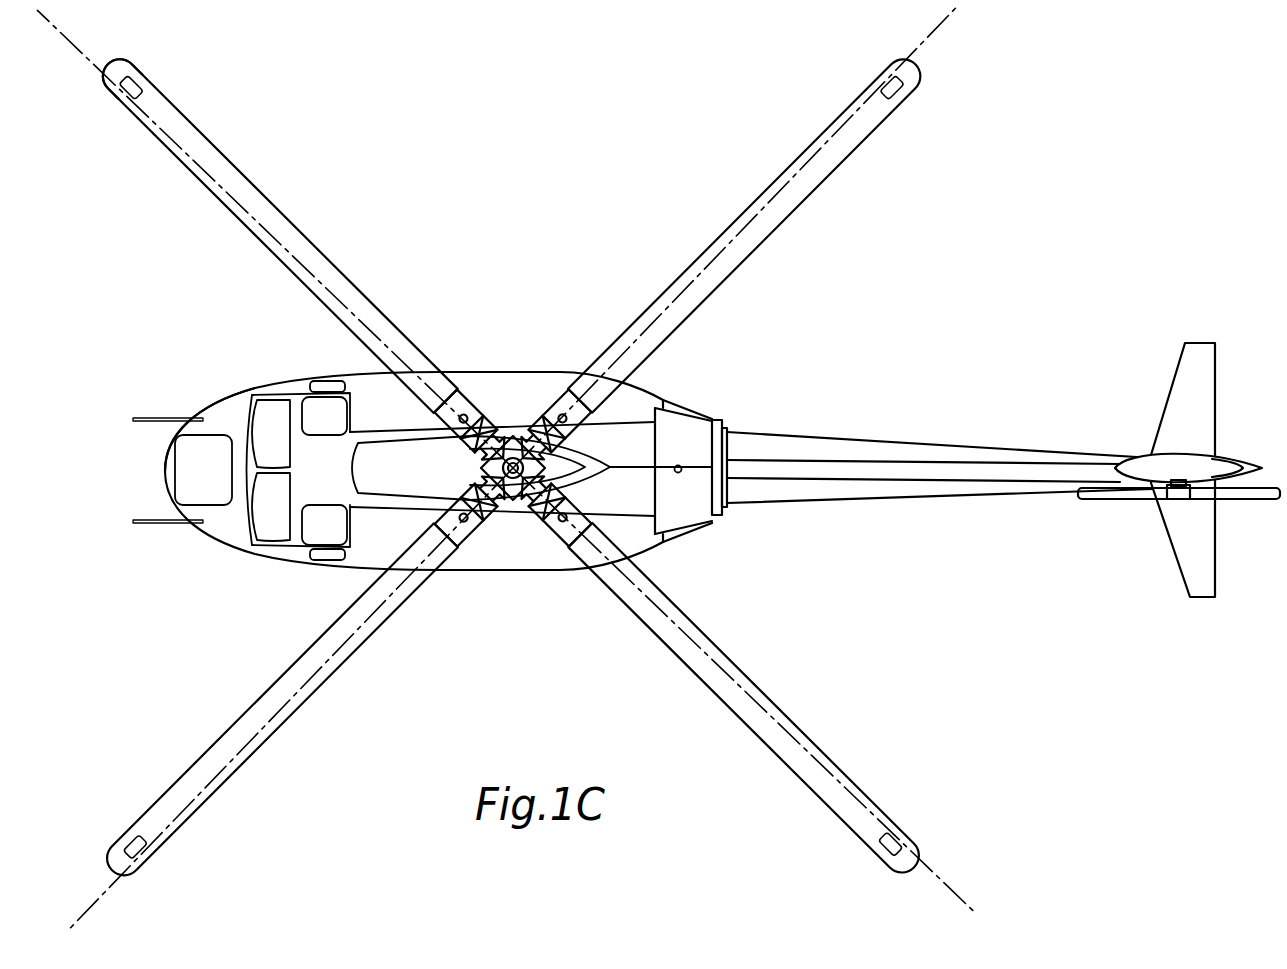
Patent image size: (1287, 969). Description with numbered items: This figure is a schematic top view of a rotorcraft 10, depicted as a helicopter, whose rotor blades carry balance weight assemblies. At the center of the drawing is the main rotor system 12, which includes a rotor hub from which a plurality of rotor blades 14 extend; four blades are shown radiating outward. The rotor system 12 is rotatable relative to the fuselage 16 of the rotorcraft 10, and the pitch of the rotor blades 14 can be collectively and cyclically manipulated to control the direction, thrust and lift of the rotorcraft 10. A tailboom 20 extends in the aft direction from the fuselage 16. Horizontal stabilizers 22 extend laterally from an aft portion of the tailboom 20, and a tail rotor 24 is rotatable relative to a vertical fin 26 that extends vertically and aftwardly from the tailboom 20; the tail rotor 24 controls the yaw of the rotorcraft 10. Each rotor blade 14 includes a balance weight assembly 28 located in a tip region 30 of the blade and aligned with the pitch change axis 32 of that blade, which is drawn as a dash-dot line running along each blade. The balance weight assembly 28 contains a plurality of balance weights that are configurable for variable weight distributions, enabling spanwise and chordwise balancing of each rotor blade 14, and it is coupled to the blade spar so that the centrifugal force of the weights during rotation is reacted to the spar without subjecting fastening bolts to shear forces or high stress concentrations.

The rotorcraft 10 is at (198, 376).
The main rotor system 12 is at (500, 430).
The rotor blades 14 is at (325, 260).
The fuselage 16 is at (430, 471).
The tailboom 20 is at (906, 442).
The horizontal stabilizers 22 is at (1203, 598).
The tail rotor 24 is at (1105, 500).
The vertical fin 26 is at (1195, 462).
The balance weight assembly 28 is at (118, 97).
The tip region 30 is at (125, 80).
The pitch change axis 32 is at (225, 196).